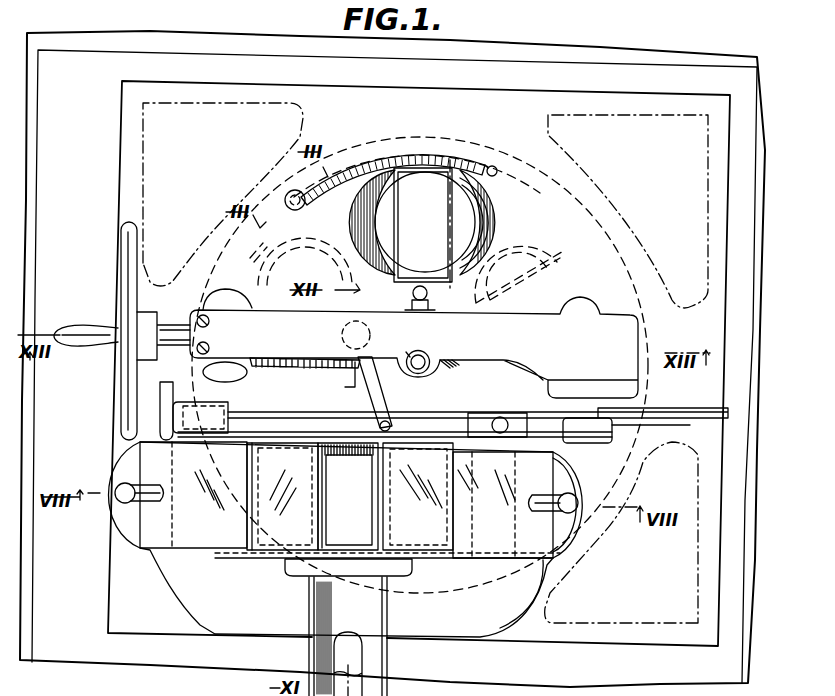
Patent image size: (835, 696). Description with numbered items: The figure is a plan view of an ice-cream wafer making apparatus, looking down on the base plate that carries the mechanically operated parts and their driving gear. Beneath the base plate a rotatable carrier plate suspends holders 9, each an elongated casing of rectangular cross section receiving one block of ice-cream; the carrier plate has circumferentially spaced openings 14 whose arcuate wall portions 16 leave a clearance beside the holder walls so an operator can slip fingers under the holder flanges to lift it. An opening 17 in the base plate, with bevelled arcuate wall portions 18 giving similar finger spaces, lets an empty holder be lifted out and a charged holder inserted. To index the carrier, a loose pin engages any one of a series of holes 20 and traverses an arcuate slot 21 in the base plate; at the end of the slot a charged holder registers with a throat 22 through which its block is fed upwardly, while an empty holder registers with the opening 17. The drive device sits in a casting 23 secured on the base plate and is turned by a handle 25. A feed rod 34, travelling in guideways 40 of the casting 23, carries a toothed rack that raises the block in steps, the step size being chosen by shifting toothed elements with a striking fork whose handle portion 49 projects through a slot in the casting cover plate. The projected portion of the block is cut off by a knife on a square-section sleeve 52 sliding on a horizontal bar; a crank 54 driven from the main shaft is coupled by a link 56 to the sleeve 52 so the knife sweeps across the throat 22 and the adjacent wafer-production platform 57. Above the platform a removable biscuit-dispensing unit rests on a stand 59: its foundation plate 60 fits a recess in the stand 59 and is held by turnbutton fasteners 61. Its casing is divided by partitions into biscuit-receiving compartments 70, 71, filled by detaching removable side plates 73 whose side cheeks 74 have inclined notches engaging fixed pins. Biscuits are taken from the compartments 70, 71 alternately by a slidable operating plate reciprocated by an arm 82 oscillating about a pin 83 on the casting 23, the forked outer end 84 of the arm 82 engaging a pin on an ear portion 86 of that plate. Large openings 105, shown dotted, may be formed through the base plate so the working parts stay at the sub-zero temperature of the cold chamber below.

The holder 9 is at (452, 250).
The opening 14 is at (468, 205).
The arcuate wall portion 16 is at (478, 222).
The opening 17 is at (420, 168).
The bevelled arcuate wall portion 18 is at (355, 210).
The hole 20 is at (493, 166).
The arcuate slot 21 is at (348, 162).
The throat 22 is at (384, 636).
The casting 23 is at (600, 312).
The handle 25 is at (130, 242).
The feed rod 34 is at (410, 357).
The guideway 40 is at (427, 358).
The handle portion 49 is at (412, 296).
The square-section sleeve 52 is at (512, 420).
The crank 54 is at (660, 410).
The link 56 is at (683, 425).
The wafer-production platform 57 is at (349, 500).
The stand 59 is at (535, 604).
The foundation plate 60 is at (150, 540).
The turnbutton fastener 61 is at (133, 507).
The biscuit-receiving compartment 70 is at (282, 496).
The biscuit-receiving compartment 71 is at (418, 496).
The removable side plate 73 is at (245, 470).
The side cheek 74 is at (257, 562).
The arm 82 is at (388, 412).
The pin 83 is at (343, 332).
The forked outer end 84 is at (379, 422).
The ear portion 86 is at (348, 496).
The large opening 105 is at (143, 147).